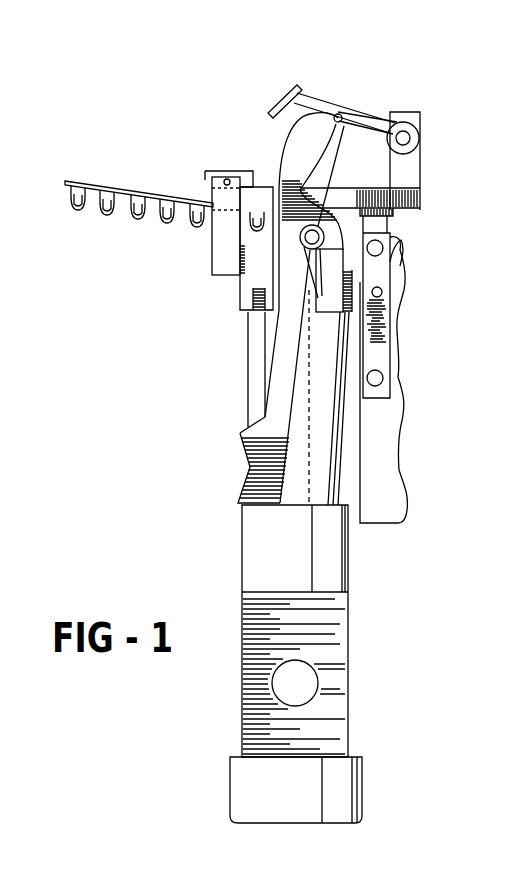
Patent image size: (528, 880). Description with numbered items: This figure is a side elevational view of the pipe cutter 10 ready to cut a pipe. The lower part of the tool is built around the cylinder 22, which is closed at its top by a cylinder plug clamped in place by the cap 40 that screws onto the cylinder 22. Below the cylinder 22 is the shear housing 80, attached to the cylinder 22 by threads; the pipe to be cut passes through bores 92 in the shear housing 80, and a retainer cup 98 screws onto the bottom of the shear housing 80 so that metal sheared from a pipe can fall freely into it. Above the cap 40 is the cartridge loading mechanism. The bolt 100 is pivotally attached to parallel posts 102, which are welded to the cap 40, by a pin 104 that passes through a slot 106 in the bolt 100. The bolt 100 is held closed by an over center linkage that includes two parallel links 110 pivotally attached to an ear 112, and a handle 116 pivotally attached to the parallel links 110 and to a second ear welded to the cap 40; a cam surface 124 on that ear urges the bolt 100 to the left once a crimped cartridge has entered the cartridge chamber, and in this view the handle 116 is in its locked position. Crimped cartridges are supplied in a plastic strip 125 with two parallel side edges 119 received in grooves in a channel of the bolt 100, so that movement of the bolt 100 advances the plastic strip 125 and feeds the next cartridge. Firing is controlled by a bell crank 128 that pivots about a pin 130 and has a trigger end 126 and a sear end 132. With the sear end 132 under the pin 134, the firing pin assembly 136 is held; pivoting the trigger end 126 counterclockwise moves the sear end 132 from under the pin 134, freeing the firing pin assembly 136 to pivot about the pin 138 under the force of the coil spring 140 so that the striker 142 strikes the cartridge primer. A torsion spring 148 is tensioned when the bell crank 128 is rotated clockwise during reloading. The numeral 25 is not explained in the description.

The pipe cutter 10 is at (126, 436).
The cylinder 22 is at (248, 413).
The tooth 25 is at (77, 212).
The cap 40 is at (242, 295).
The shear housing 80 is at (337, 635).
The bores 92 is at (288, 662).
The retainer cup 98 is at (237, 798).
The bolt 100 is at (420, 195).
The parallel posts 102 is at (220, 233).
The pin 104 is at (226, 177).
The slot 106 is at (227, 179).
The parallel links 110 is at (385, 303).
The ear 112 is at (390, 226).
The handle 116 is at (403, 380).
The side edges 119 is at (152, 200).
The cam surface 124 is at (401, 241).
The plastic strip 125 is at (80, 183).
The trigger end 126 is at (240, 478).
The bell crank 128 is at (278, 322).
The pin 130 is at (279, 198).
The sear end 132 is at (287, 127).
The pin 134 is at (342, 124).
The firing pin assembly 136 is at (310, 100).
The pin 138 is at (407, 130).
The coil spring 140 is at (362, 107).
The striker 142 is at (288, 86).
The torsion spring 148 is at (320, 298).